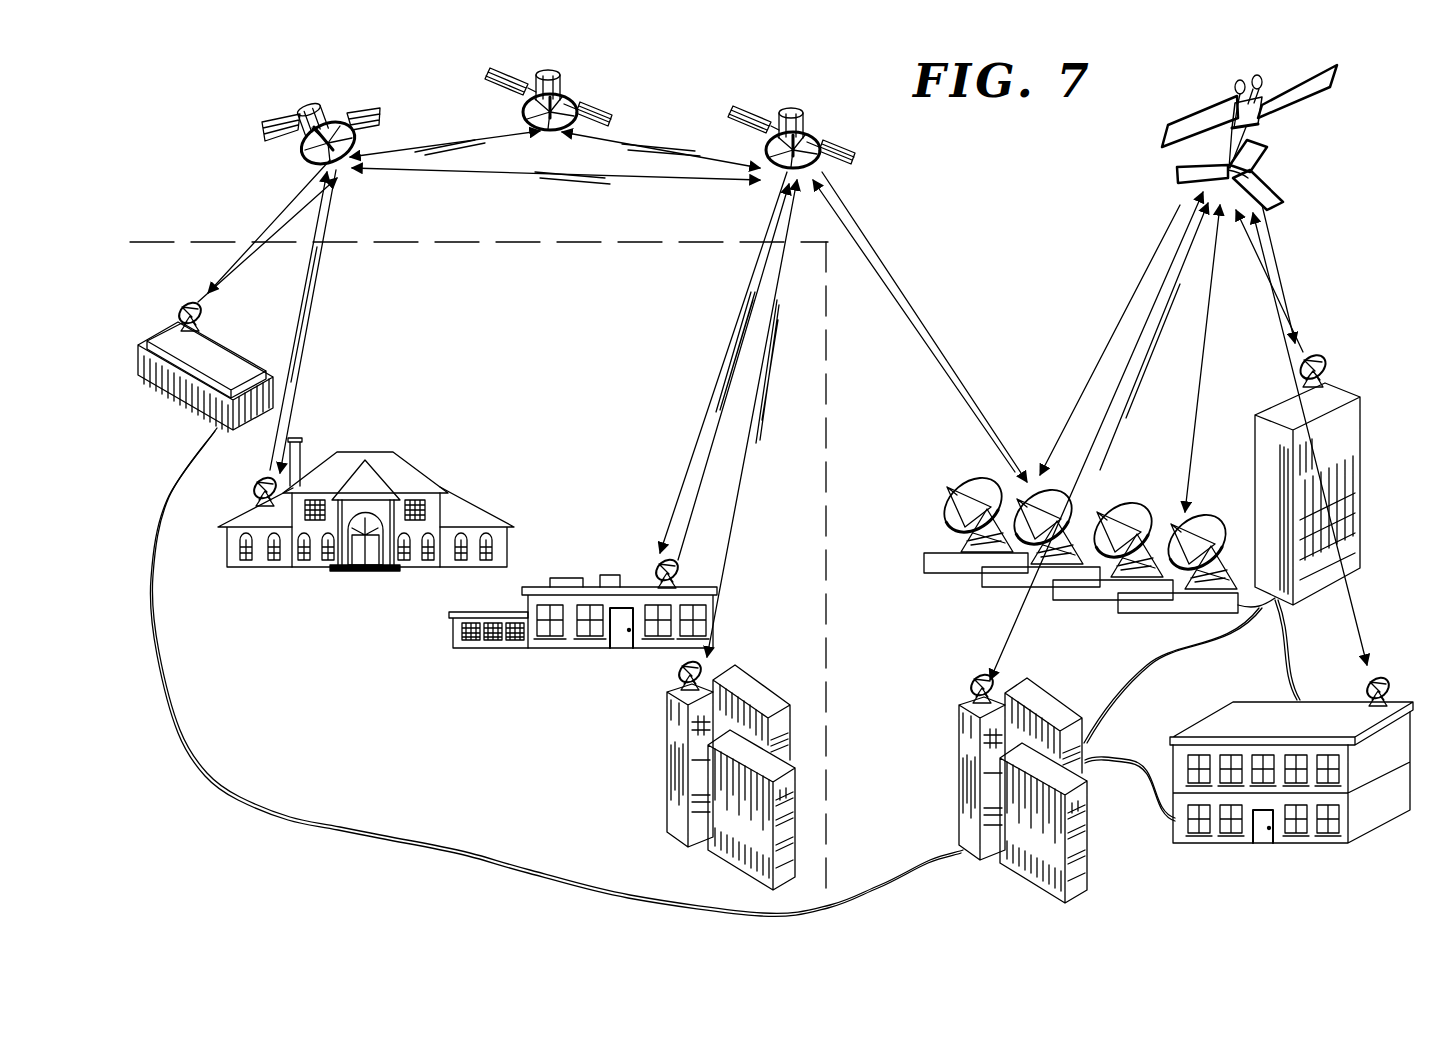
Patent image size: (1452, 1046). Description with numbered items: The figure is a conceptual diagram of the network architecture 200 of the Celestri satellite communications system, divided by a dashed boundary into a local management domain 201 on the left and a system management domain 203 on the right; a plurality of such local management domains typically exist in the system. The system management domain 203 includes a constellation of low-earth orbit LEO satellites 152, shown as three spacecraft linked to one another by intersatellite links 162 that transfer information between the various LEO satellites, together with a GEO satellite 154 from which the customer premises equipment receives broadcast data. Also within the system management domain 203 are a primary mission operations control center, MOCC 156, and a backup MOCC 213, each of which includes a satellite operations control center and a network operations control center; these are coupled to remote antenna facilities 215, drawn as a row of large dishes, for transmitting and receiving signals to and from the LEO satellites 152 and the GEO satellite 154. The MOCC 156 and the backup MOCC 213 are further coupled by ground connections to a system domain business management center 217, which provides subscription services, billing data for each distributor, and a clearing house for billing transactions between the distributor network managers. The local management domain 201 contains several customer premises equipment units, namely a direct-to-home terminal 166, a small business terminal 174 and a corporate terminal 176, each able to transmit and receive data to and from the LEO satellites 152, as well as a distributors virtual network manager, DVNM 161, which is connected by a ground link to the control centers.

The LEO satellites 152 is at (266, 128).
The GEO satellites 154 is at (1165, 132).
The primary mission operations control center (MOCC) 156 is at (1355, 420).
The distributors virtual network manager (DVNM) 161 is at (193, 397).
The intersatellite links (ISL) 162 is at (445, 143).
The home terminal 166 is at (256, 478).
The small business terminal 174 is at (690, 558).
The corporate terminal 176 is at (679, 669).
The conceptual network architecture 200 is at (1036, 138).
The local management domain 201 is at (510, 333).
The system management domain 203 is at (1044, 289).
The backup mission operations control center (MOCC) 213 is at (973, 740).
The remote antenna facilities 215 is at (946, 503).
The system domain business management center 217 is at (1210, 730).